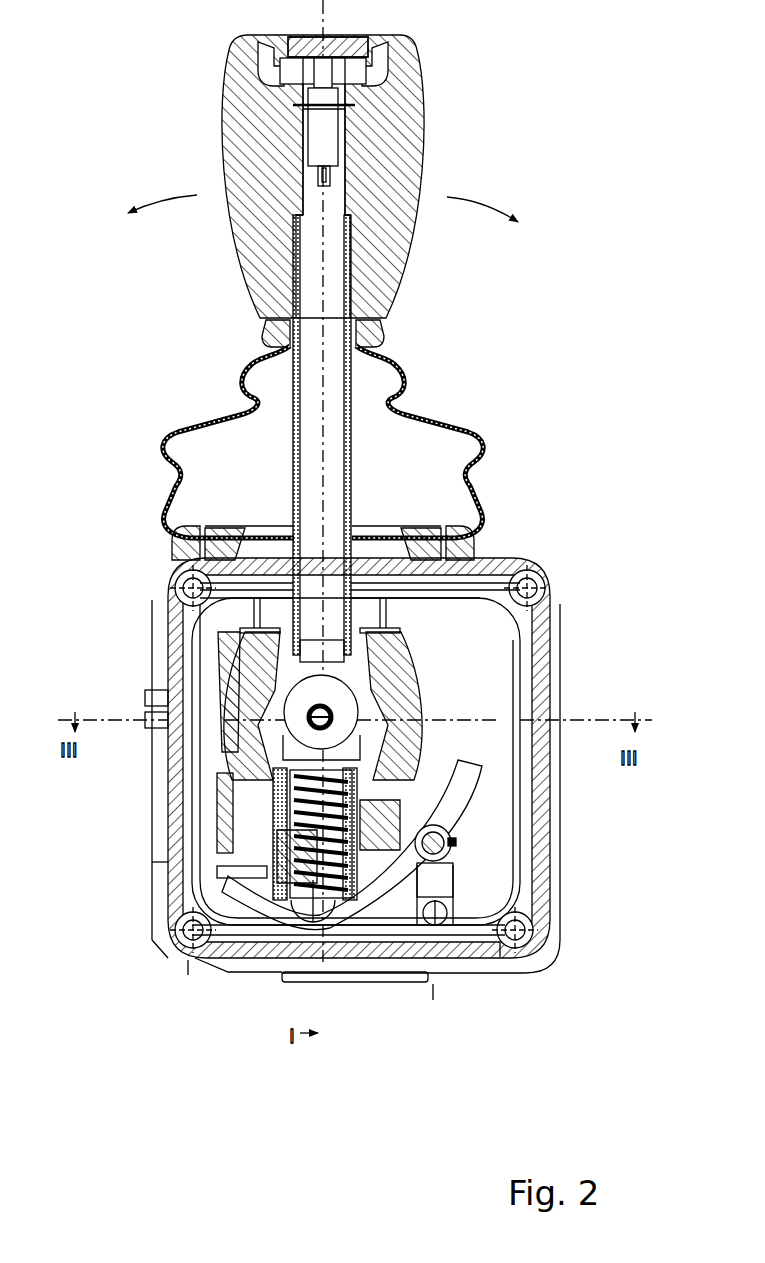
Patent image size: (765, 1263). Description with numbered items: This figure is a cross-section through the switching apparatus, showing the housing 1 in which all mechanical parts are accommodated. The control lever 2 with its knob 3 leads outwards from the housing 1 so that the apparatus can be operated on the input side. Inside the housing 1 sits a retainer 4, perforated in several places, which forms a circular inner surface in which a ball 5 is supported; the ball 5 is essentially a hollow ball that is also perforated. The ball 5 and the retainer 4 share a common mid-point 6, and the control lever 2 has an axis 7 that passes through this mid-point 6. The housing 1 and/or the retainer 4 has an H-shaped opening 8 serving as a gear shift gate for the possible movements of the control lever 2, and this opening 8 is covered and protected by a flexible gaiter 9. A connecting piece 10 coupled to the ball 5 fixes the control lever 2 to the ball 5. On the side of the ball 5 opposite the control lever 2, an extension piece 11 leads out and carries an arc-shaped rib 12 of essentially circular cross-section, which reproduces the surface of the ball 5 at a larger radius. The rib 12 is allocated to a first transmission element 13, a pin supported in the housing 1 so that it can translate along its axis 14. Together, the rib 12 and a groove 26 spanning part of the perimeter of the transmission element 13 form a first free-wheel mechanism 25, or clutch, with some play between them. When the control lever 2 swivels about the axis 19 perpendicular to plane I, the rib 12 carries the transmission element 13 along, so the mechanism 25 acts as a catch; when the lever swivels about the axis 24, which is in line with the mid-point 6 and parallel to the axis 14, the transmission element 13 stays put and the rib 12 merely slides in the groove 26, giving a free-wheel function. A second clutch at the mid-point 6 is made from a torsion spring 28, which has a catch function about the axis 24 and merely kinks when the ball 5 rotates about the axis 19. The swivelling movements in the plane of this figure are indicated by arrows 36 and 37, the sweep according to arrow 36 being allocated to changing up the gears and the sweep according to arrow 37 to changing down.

The housing 1 is at (251, 957).
The control lever 2 is at (352, 447).
The knob 3 is at (370, 149).
The retainer 4 is at (410, 693).
The ball 5 is at (246, 680).
The mid-point 6 is at (400, 636).
The axis 7 is at (326, 375).
The H-shaped opening 8 is at (267, 540).
The flexible gaiter 9 is at (203, 422).
The connecting piece 10 is at (290, 660).
The extension piece 11 is at (282, 736).
The arc-shaped rib 12 is at (458, 796).
The first transmission element 13 is at (510, 960).
The axis 14 is at (460, 848).
The axis 19 is at (482, 718).
The axis 24 is at (400, 636).
The first free-wheel mechanism 25 is at (476, 844).
The groove 26 is at (467, 965).
The torsion spring 28 is at (320, 710).
The arrow 36 is at (170, 197).
The arrow 37 is at (475, 204).